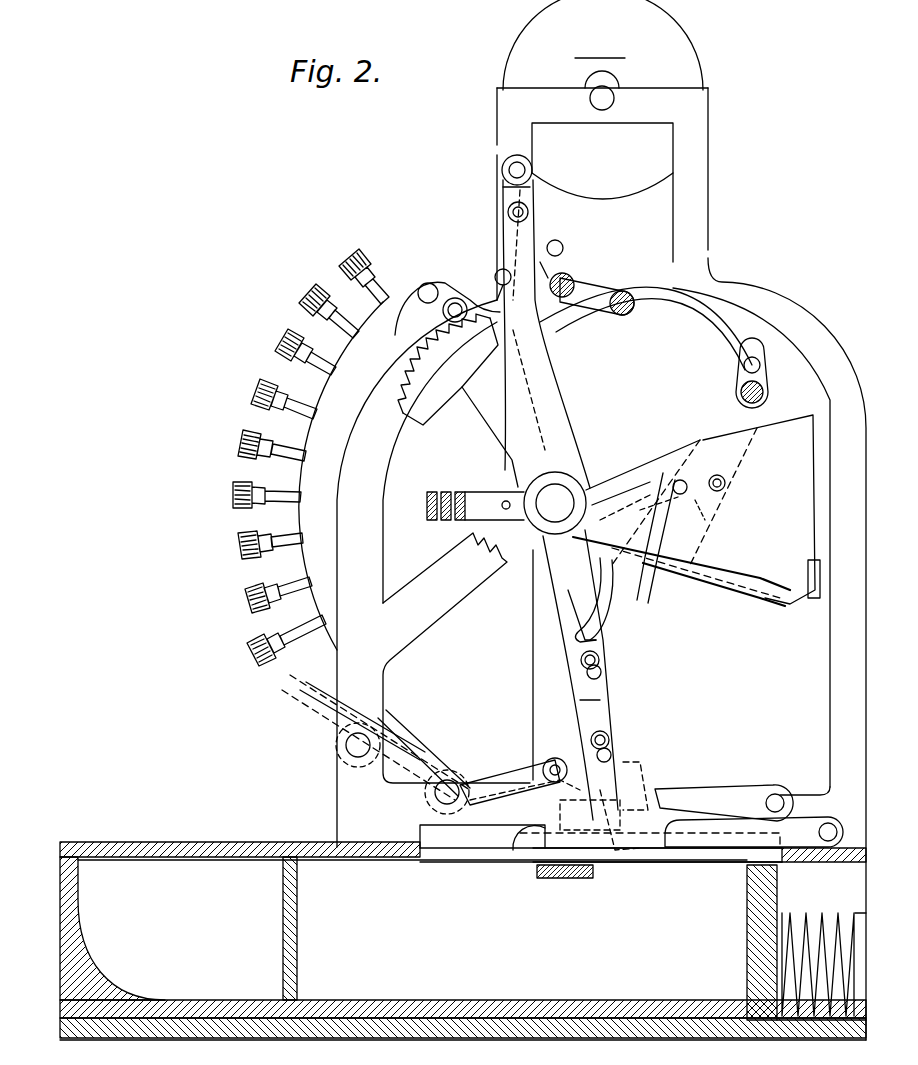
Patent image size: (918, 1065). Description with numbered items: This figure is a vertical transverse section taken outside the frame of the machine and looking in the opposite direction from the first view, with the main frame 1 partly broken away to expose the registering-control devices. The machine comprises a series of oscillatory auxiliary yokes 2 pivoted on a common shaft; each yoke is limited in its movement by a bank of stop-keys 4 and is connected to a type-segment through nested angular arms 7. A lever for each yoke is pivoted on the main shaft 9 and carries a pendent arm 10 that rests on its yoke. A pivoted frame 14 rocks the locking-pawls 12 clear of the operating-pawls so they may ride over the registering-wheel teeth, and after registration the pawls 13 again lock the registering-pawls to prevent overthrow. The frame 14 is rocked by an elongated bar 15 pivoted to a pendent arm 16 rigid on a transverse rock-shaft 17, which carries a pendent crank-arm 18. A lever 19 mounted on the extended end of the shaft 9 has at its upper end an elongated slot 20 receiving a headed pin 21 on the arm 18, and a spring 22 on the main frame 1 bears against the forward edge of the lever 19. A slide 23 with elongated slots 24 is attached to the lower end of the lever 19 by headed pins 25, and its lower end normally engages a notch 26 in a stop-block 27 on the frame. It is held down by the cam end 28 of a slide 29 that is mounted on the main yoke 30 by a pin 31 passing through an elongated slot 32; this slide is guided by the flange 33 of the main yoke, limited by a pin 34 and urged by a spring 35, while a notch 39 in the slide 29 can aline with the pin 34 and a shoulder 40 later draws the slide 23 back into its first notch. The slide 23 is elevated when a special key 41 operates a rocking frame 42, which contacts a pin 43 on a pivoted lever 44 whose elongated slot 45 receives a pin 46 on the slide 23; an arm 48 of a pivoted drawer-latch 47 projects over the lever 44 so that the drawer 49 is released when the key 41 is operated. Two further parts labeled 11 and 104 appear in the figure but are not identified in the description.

The main frame 1 is at (582, 520).
The auxiliary yokes 2 is at (681, 518).
The stop-keys 4 is at (290, 345).
The nested angular arms 7 is at (465, 490).
The main shaft 9 is at (555, 503).
The pendent arm 10 is at (458, 400).
The lever 11 is at (240, 545).
The locking-pawls 12 is at (680, 290).
The pawls 13 is at (568, 283).
The pivoted frame 14 is at (560, 345).
The elongated bar 15 is at (582, 305).
The pendent arm 16 is at (500, 232).
The transverse rock-shaft 17 is at (505, 170).
The pendent crank-arm 18 is at (503, 187).
The lever 19 is at (546, 334).
The elongated slot 20 is at (532, 207).
The headed pin 21 is at (508, 213).
The spring 22 is at (500, 285).
The slide 23 is at (601, 702).
The elongated slots 24 is at (602, 672).
The headed pins 25 is at (600, 660).
The notch 26 is at (612, 840).
The stop-block 27 is at (590, 815).
The cam end 28 is at (582, 609).
The slide 29 is at (615, 595).
The main yoke 30 is at (761, 509).
The pin 31 is at (680, 478).
The elongated slot 32 is at (673, 484).
The flange 33 is at (706, 498).
The pin 34 is at (640, 508).
The spring 35 is at (725, 478).
The notch 39 is at (643, 487).
The shoulder 40 is at (660, 572).
The special key 41 is at (318, 690).
The rocking frame 42 is at (500, 785).
The pin 43 is at (570, 768).
The pivoted lever 44 is at (765, 378).
The elongated slot 45 is at (525, 797).
The pin 46 is at (628, 820).
The drawer-latch 47 is at (718, 838).
The arm 48 is at (642, 762).
The drawer 49 is at (463, 941).
The dial 104 is at (600, 48).